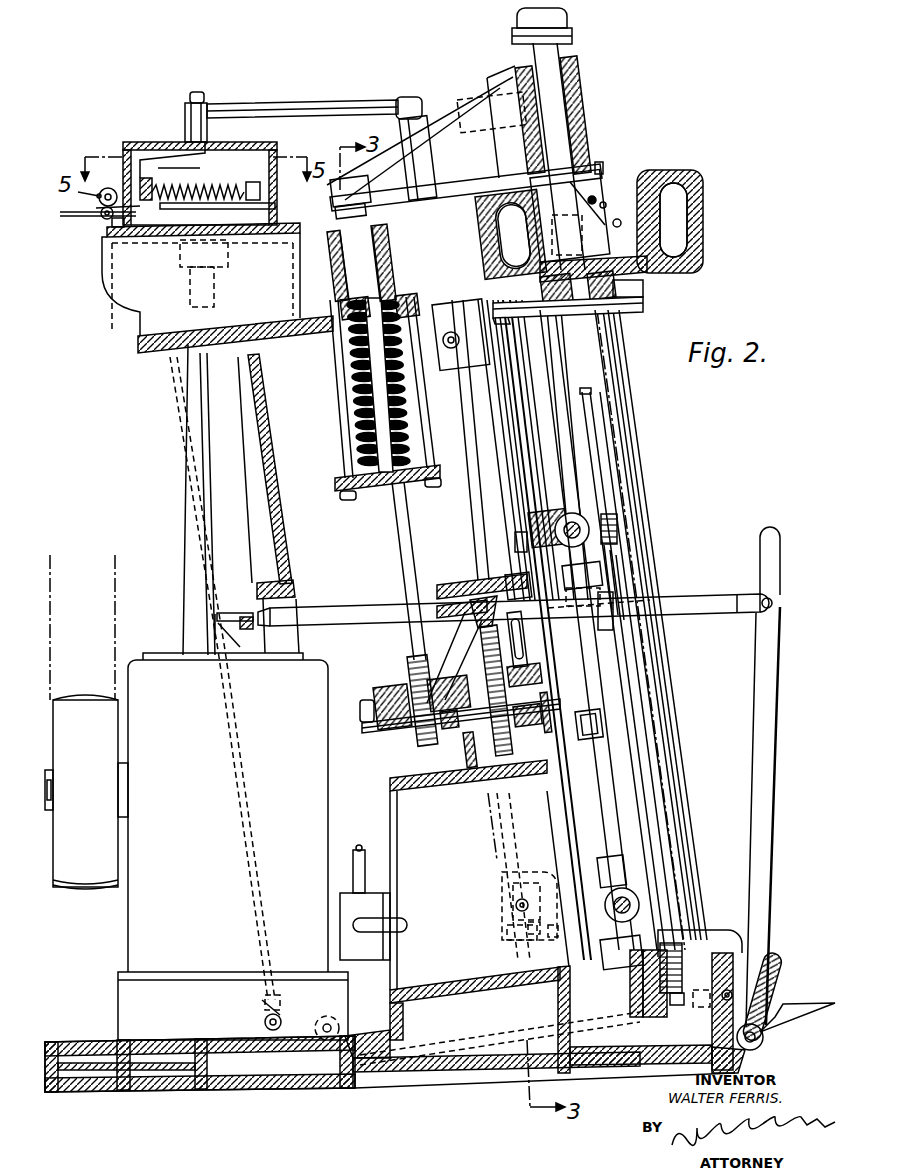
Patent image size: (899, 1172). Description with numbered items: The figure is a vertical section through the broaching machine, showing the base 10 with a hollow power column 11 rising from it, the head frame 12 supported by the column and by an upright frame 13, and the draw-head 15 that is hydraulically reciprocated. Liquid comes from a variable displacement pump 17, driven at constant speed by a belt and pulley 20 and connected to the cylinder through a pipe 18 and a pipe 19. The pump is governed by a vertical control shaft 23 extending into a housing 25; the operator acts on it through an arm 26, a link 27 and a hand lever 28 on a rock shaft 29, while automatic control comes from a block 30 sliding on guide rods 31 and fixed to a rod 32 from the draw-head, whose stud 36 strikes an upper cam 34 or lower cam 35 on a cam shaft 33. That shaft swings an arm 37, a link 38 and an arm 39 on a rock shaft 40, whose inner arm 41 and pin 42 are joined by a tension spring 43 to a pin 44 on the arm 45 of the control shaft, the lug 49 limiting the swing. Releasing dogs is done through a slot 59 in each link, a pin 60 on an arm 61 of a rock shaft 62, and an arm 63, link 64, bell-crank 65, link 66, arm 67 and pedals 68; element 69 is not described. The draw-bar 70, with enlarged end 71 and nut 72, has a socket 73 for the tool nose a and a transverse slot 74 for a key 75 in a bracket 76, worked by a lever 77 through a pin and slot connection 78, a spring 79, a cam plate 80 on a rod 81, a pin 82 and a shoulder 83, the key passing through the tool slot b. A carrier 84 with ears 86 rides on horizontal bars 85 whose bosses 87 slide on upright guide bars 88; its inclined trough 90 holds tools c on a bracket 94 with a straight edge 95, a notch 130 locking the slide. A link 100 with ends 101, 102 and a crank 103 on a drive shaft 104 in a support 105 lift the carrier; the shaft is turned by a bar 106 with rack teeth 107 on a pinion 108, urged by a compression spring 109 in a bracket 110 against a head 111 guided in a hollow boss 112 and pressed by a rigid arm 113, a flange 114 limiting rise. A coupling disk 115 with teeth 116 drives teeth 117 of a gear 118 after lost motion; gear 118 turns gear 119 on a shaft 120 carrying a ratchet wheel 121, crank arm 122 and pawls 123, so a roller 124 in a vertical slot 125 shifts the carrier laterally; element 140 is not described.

The base 10 is at (513, 1066).
The columns 11 is at (691, 832).
The head frame 12 is at (703, 225).
The upright frame 13 is at (224, 546).
The draw-head 15 is at (580, 104).
The variable displacement pump 17 is at (137, 933).
The pipe 18 is at (365, 866).
The pipe 19 is at (373, 919).
The belt and pulley 20 is at (107, 732).
The control shaft 23 is at (203, 468).
The control box or housing 25 is at (140, 238).
The arm 26 is at (240, 618).
The link 27 is at (330, 608).
The hand lever 28 is at (768, 751).
The rock shaft 29 is at (755, 1044).
The block 30 is at (539, 874).
The guide rods 31 is at (511, 416).
The rod 32 is at (490, 170).
The cam shaft 33 is at (470, 446).
The upper cam 34 is at (460, 374).
The lower cam 35 is at (507, 936).
The stud 36 is at (549, 936).
The arm 37 is at (409, 99).
The link 38 is at (290, 106).
The arm 39 is at (210, 118).
The rock shaft 40 is at (197, 98).
The arm 41 is at (147, 172).
The pin 42 is at (140, 182).
The tension spring 43 is at (222, 186).
The pin 44 is at (252, 182).
The arm 45 is at (270, 207).
The lug 49 is at (204, 273).
The slot 59 is at (118, 228).
The pin 60 is at (102, 216).
The arm 61 is at (96, 208).
The rock shaft 62 is at (99, 197).
The arm 63 is at (78, 191).
The link 64 is at (185, 362).
The bell-crank 65 is at (297, 1019).
The link 66 is at (481, 1038).
The arm 67 is at (724, 1000).
The pedals 68 is at (805, 1004).
The rod 69 is at (70, 214).
The draw-bar 70 is at (557, 57).
The lower enlarged end 71 is at (570, 215).
The nut 72 is at (568, 27).
The socket 73 is at (566, 224).
The transverse slot 74 is at (525, 241).
The key 75 is at (648, 242).
The bracket 76 is at (505, 230).
The lever 77 is at (621, 222).
The pin and slot connection 78 is at (644, 281).
The spring 79 is at (563, 288).
The cam plate 80 is at (598, 199).
The rod 81 is at (603, 166).
The pin 82 is at (608, 206).
The shoulder 83 is at (578, 199).
The carrier 84 is at (666, 769).
The horizontal bars 85 is at (556, 540).
The ears 86 is at (575, 513).
The bosses 87 is at (515, 540).
The upright guide bars 88 is at (536, 463).
The trough 90 is at (652, 719).
The tool supporting bracket 94 is at (676, 1005).
The straight edge 95 is at (682, 975).
The link 100 is at (600, 802).
The lower end 101 is at (612, 868).
The upper end 102 is at (596, 732).
The crank 103 is at (548, 728).
The drive shaft 104 is at (455, 720).
The support 105 is at (400, 814).
The bar 106 is at (406, 572).
The rack teeth 107 is at (408, 676).
The pinion 108 is at (392, 731).
The compression spring 109 is at (398, 452).
The bracket 110 is at (340, 480).
The head 111 is at (352, 267).
The hollow boss 112 is at (335, 215).
The rigid arm 113 is at (330, 197).
The flange 114 is at (350, 293).
The coupling disk 115 is at (480, 725).
The teeth 116 is at (465, 668).
The teeth 117 is at (482, 630).
The gear 118 is at (496, 742).
The gear 119 is at (472, 580).
The shaft 120 is at (512, 575).
The ratchet wheel 121 is at (574, 565).
The crank arm 122 is at (612, 556).
The pawls 123 is at (618, 571).
The roller 124 is at (623, 586).
The vertical slot 125 is at (521, 639).
The notch 130 is at (614, 612).
The plate 140 is at (596, 304).
The nose a is at (622, 661).
The slot b is at (598, 400).
The tools c is at (617, 532).